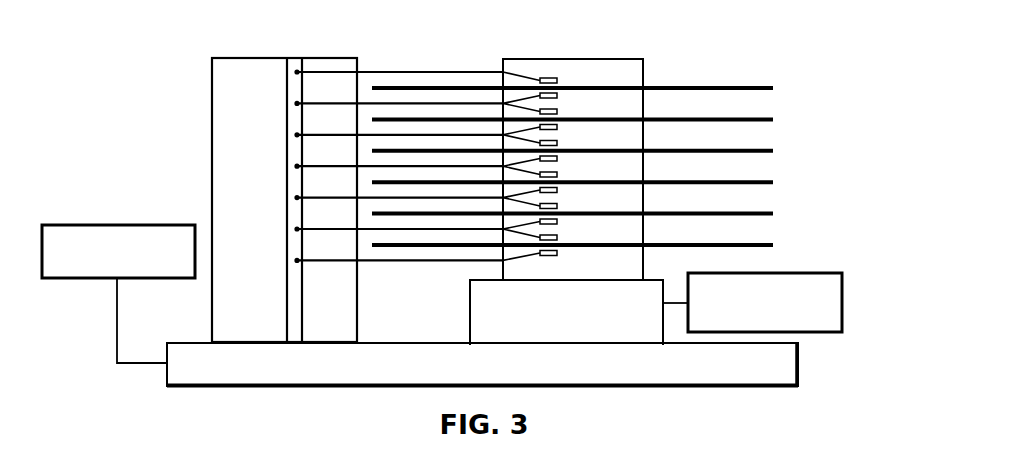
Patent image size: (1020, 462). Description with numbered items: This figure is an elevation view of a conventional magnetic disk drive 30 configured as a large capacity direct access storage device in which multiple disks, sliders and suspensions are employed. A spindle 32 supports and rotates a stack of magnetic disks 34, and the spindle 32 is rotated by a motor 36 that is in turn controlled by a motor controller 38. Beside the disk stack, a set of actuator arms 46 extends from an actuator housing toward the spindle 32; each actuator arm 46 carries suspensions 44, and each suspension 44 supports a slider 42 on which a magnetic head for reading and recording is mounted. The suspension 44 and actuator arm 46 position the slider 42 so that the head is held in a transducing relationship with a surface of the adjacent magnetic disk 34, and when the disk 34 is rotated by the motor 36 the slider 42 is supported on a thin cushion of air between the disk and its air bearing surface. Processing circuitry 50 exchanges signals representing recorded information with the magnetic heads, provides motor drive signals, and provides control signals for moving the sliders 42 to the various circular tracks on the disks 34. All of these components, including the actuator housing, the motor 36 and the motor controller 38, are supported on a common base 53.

The magnetic disk drive 30 is at (694, 58).
The spindle 32 is at (621, 59).
The magnetic disk 34 is at (754, 89).
The motor 36 is at (585, 321).
The motor controller 38 is at (832, 333).
The slider 42 is at (565, 100).
The suspension 44 is at (536, 78).
The actuator arm 46 is at (457, 103).
The processing circuitry 50 is at (100, 225).
The base 53 is at (280, 387).